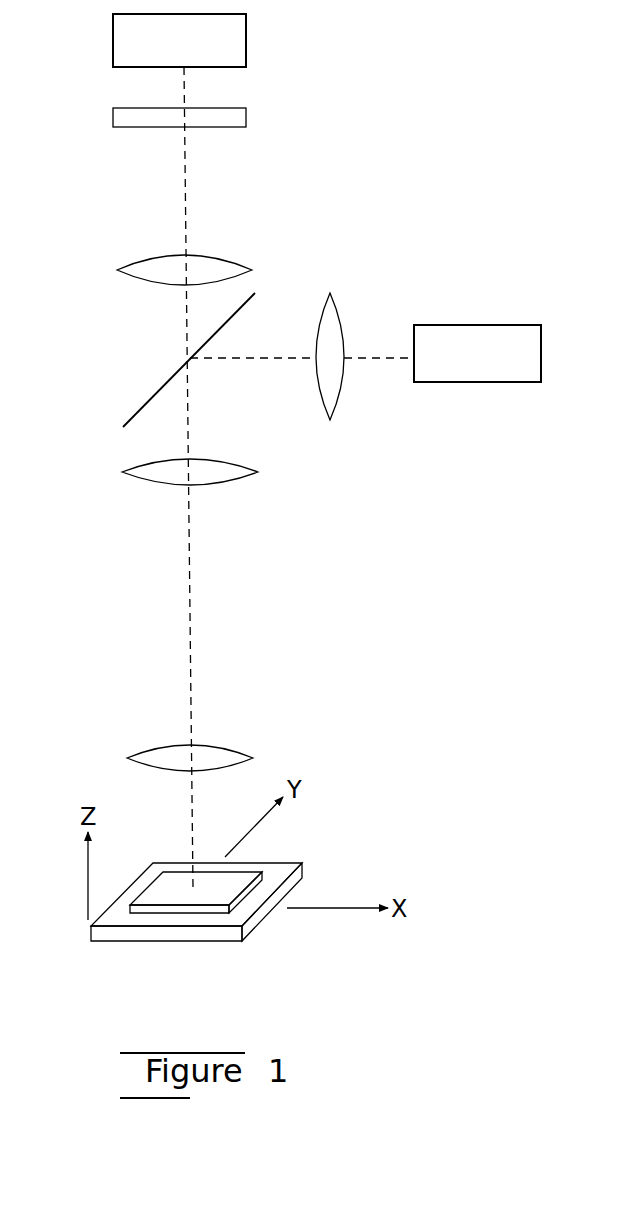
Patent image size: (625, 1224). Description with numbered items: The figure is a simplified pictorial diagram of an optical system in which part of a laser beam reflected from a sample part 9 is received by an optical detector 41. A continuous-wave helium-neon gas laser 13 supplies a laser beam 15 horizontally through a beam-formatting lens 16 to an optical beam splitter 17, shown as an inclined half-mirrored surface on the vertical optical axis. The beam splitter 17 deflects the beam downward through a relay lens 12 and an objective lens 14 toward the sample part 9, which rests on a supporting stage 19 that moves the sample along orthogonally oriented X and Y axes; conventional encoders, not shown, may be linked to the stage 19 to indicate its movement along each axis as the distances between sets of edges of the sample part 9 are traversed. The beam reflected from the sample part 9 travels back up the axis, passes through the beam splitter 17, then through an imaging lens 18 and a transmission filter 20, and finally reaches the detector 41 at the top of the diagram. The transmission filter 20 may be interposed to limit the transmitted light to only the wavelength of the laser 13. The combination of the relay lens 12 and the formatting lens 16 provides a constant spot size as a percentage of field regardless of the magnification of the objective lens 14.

The detector 41 is at (246, 40).
The transmission filter 20 is at (246, 118).
The imaging lens 18 is at (234, 262).
The beam splitter 17 is at (225, 320).
The beam-formatting lens 16 is at (333, 417).
The laser beam 15 is at (370, 361).
The laser 13 is at (536, 380).
The relay lens 12 is at (235, 480).
The objective lens 14 is at (247, 755).
The supporting stage 19 is at (215, 941).
The sample part 9 is at (255, 875).